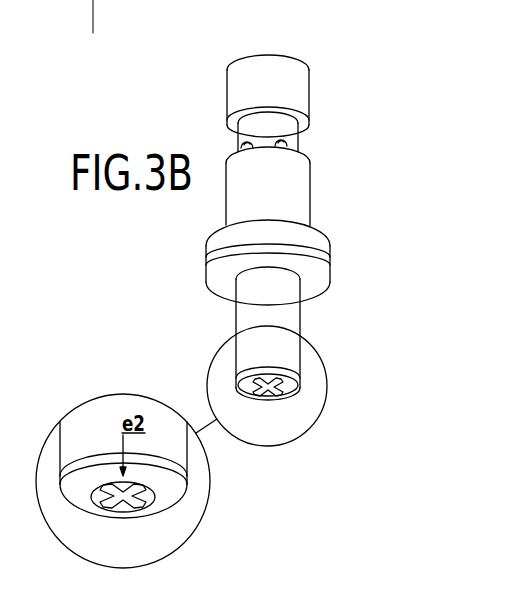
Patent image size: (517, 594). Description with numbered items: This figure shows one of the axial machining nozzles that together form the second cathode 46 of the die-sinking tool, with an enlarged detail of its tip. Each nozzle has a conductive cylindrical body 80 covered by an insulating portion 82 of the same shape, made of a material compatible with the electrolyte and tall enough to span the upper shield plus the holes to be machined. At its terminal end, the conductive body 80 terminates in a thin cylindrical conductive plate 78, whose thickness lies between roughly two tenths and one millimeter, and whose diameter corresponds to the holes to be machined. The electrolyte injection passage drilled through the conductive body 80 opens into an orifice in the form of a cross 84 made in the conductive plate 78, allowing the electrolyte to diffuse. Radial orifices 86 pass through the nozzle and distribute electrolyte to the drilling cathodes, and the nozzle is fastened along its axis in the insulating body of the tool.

The second cathode 46 is at (184, 241).
The cylindrical conductive plate 78 is at (287, 391).
The conductive cylindrical body 80 is at (302, 195).
The insulating portion 82 is at (283, 342).
The cross 84 is at (113, 499).
The radial orifices 86 is at (289, 138).